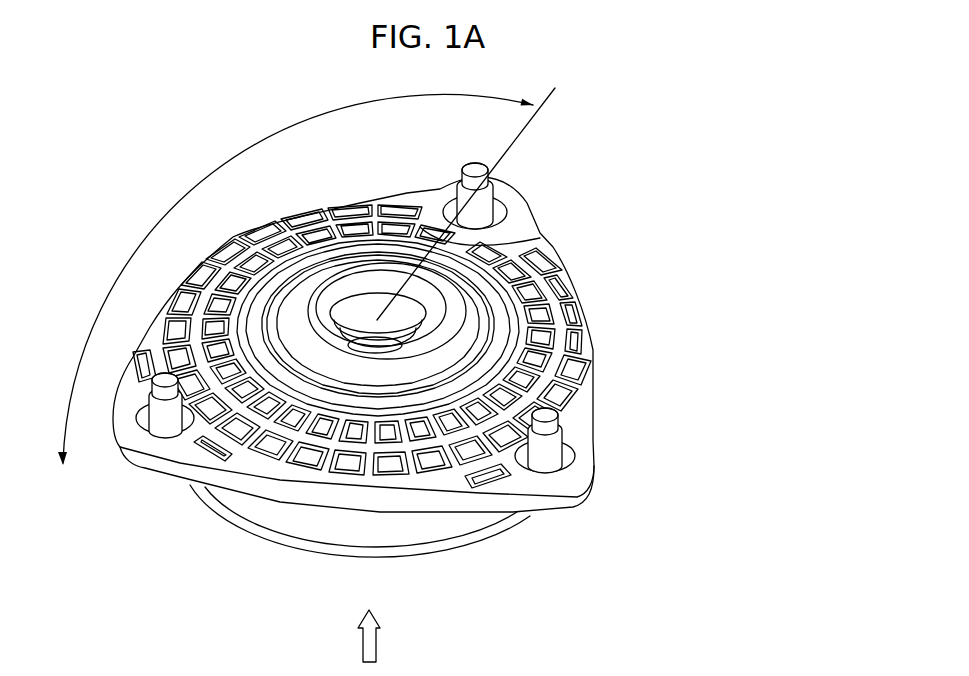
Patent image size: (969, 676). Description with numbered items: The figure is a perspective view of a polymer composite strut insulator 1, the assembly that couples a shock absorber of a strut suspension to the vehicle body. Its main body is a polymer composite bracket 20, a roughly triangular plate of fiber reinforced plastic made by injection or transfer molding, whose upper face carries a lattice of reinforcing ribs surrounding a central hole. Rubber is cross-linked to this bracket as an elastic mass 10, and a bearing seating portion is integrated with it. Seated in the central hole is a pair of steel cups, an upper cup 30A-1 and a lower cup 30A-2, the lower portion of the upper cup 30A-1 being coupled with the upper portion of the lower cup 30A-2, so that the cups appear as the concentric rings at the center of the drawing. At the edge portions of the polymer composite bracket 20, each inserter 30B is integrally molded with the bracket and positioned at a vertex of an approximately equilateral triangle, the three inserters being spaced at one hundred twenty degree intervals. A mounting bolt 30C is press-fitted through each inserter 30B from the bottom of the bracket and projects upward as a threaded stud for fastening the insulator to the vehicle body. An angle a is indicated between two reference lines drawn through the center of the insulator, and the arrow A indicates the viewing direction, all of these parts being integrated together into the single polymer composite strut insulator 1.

The polymer composite strut insulator 1 is at (420, 340).
The elastic mass 10 is at (500, 352).
The polymer composite bracket 20 is at (493, 330).
The upper cup 30A-1 is at (47, 478).
The lower cup 30A-2 is at (445, 300).
The inserter 30B is at (513, 212).
The mounting bolt 30C is at (553, 422).
The angle a is at (306, 276).
The viewing direction A is at (383, 636).